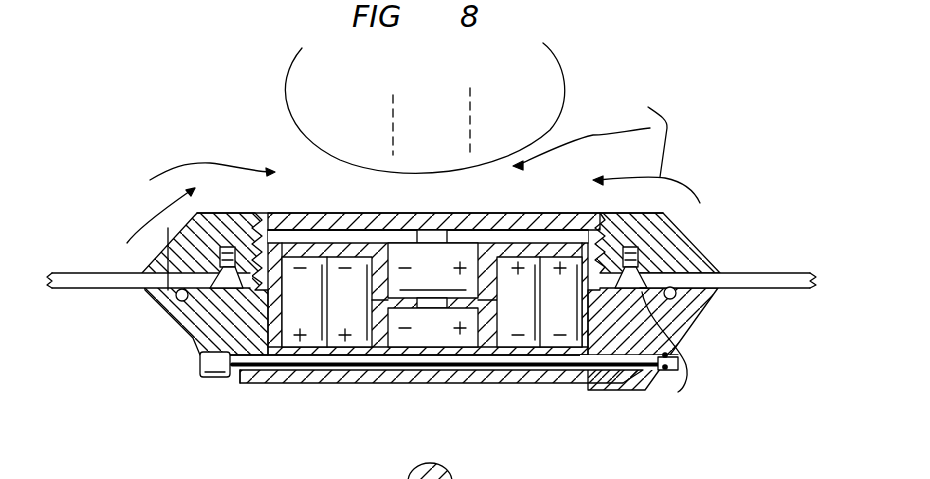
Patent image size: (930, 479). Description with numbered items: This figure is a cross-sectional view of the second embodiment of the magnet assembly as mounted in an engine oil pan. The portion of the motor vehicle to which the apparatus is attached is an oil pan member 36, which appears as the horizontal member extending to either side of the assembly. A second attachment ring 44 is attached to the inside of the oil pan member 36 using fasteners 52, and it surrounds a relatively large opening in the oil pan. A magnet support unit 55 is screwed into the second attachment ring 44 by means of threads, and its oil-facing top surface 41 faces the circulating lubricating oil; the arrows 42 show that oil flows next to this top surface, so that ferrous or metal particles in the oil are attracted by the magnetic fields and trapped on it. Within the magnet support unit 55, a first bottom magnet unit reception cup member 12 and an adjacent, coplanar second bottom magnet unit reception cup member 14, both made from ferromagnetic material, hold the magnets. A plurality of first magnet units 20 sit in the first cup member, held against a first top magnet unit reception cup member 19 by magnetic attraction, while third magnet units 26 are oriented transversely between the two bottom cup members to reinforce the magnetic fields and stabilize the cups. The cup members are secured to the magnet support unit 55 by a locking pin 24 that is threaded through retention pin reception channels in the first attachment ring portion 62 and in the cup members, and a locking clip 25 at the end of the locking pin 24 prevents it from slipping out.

The first bottom magnet unit reception cup member 12 is at (352, 385).
The second bottom magnet unit reception cup member 14 is at (530, 385).
The first top magnet unit reception cup member 19 is at (380, 263).
The first magnet units 20 is at (338, 282).
The locking pin 24 is at (240, 376).
The locking clip 25 is at (660, 374).
The third magnet units 26 is at (430, 368).
The oil pan member 36 is at (117, 290).
The oil-facing top surface 41 is at (360, 212).
The arrows 42 is at (210, 163).
The second attachment ring 44 is at (684, 256).
The fasteners 52 is at (186, 303).
The magnet support unit 55 is at (222, 248).
The first attachment ring portion 62 is at (678, 392).